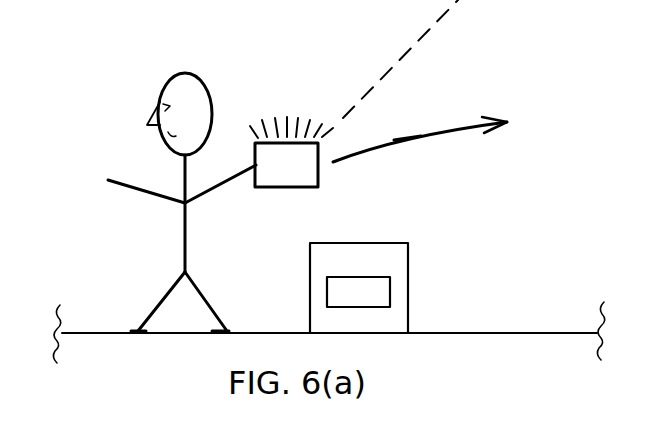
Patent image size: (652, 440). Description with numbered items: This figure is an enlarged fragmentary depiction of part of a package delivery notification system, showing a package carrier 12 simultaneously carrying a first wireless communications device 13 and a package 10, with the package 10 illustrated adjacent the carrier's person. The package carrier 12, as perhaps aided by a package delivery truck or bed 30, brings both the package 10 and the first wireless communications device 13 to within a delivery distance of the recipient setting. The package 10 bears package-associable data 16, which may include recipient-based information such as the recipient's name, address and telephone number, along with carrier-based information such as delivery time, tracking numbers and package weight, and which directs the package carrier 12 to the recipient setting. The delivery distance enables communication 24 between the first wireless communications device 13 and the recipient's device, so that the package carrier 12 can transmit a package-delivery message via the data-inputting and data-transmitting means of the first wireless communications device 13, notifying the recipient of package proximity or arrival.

The package 10 is at (409, 258).
The package carrier 12 is at (200, 82).
The first wireless communications device 13 is at (279, 188).
The package-associable data 16 is at (390, 294).
The communication 24 is at (449, 130).
The package delivery truck or bed 30 is at (539, 331).